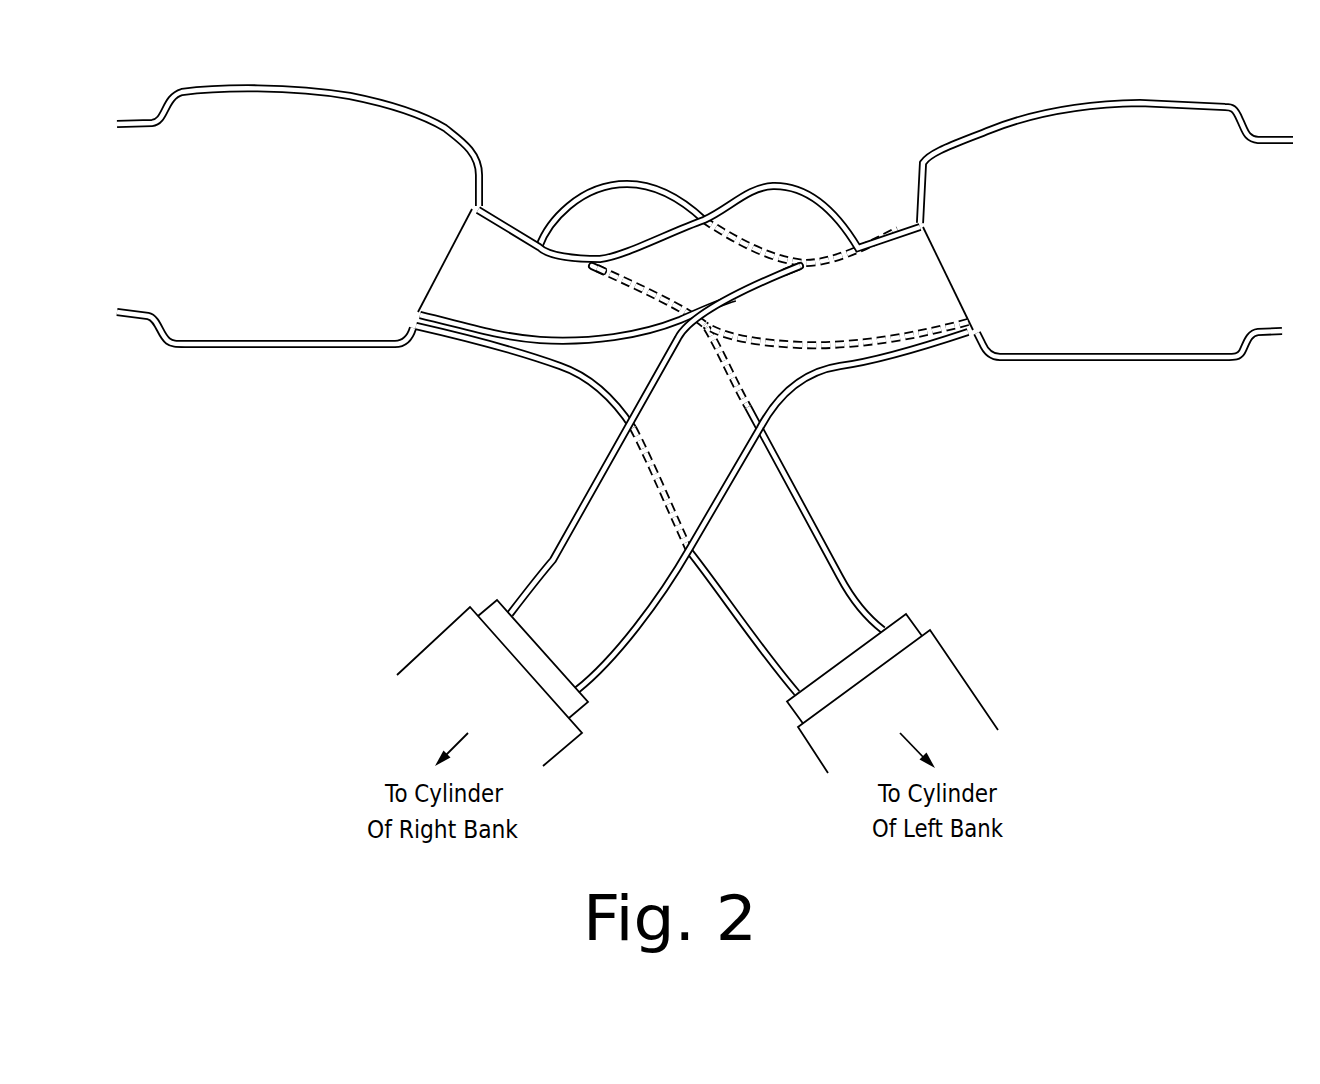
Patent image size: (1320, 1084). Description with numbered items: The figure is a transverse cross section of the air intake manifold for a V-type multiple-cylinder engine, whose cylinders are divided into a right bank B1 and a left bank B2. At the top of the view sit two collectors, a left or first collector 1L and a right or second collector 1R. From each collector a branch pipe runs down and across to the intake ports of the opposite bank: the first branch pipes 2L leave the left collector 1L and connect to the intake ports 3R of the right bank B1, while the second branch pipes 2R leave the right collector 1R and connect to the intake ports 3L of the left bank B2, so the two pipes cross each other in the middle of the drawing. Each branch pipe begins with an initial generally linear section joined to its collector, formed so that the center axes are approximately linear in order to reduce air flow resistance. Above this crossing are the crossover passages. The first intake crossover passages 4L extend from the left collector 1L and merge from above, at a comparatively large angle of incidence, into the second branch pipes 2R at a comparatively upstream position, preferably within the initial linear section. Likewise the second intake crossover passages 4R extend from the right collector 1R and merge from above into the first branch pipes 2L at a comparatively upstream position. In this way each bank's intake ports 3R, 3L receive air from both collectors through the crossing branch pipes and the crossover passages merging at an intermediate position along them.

The second collector 1R is at (410, 138).
The first collector 1L is at (1013, 132).
The second branch pipes 2R is at (632, 373).
The first branch pipes 2L is at (915, 300).
The intake ports of the right bank 3R is at (591, 683).
The intake ports of the left bank 3L is at (789, 690).
The second intake crossover passages 4R is at (740, 221).
The first intake crossover passages 4L is at (603, 204).
The right bank B1 is at (437, 637).
The left bank B2 is at (965, 678).